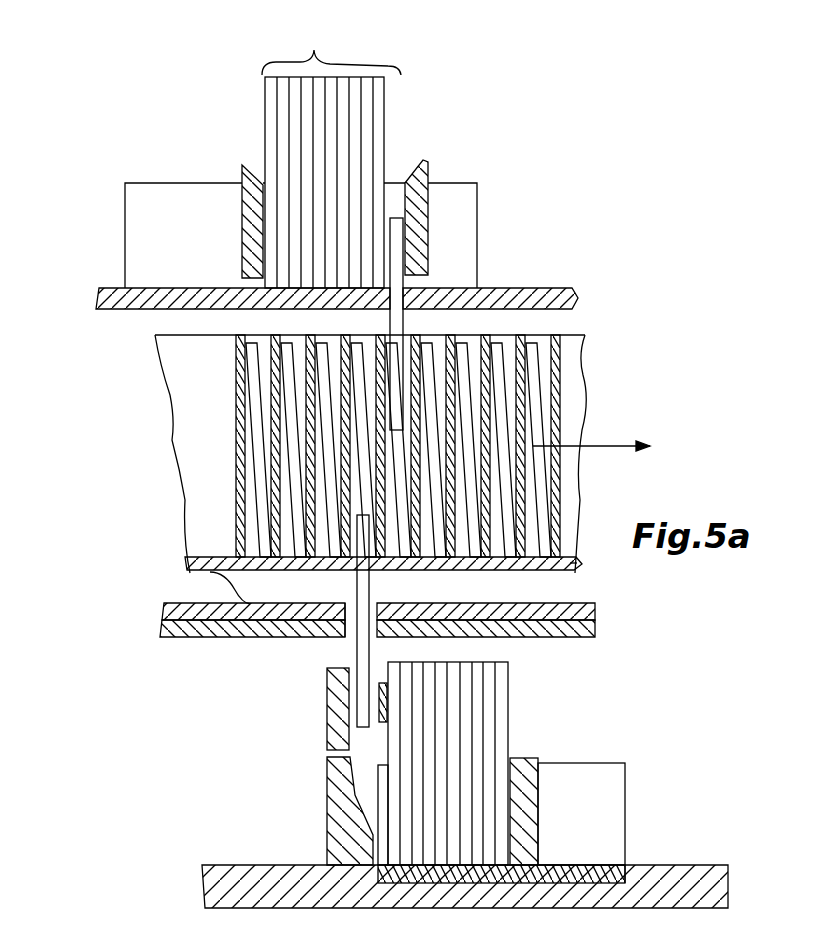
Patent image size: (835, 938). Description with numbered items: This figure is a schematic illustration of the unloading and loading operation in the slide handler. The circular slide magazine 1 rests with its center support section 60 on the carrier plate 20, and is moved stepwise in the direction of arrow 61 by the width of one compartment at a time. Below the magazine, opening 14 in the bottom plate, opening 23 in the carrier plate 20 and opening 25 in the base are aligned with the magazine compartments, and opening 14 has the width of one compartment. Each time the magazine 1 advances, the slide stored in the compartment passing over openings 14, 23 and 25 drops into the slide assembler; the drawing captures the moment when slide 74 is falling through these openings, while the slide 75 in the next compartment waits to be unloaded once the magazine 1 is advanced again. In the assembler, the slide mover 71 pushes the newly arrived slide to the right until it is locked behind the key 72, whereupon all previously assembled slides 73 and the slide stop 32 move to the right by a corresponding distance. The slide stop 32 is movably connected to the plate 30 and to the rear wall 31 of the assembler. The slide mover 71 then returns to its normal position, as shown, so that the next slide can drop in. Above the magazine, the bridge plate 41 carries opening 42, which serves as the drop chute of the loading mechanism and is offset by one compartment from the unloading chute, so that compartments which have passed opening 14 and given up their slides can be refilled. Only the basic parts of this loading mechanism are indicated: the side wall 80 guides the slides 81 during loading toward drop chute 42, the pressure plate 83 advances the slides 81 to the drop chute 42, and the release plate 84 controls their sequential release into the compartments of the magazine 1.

The slide magazine 1 is at (578, 557).
The opening 14 is at (370, 568).
The carrier plate 20 is at (162, 612).
The opening 23 is at (348, 603).
The opening 25 is at (354, 635).
The plate 30 is at (605, 870).
The rear wall 31 is at (608, 780).
The slide stop 32 is at (516, 757).
The bridge plate 41 is at (577, 296).
The opening / drop chute 42 is at (403, 312).
The center support section 60 is at (518, 583).
The arrow 61 is at (606, 446).
The slide mover 71 is at (338, 704).
The key 72 is at (378, 692).
The assembled slides 73 is at (443, 763).
The slide 74 is at (371, 647).
The slide 75 is at (325, 416).
The side wall 80 is at (143, 221).
The slides 81 is at (331, 154).
The pressure plate 83 is at (243, 165).
The release plate 84 is at (420, 182).